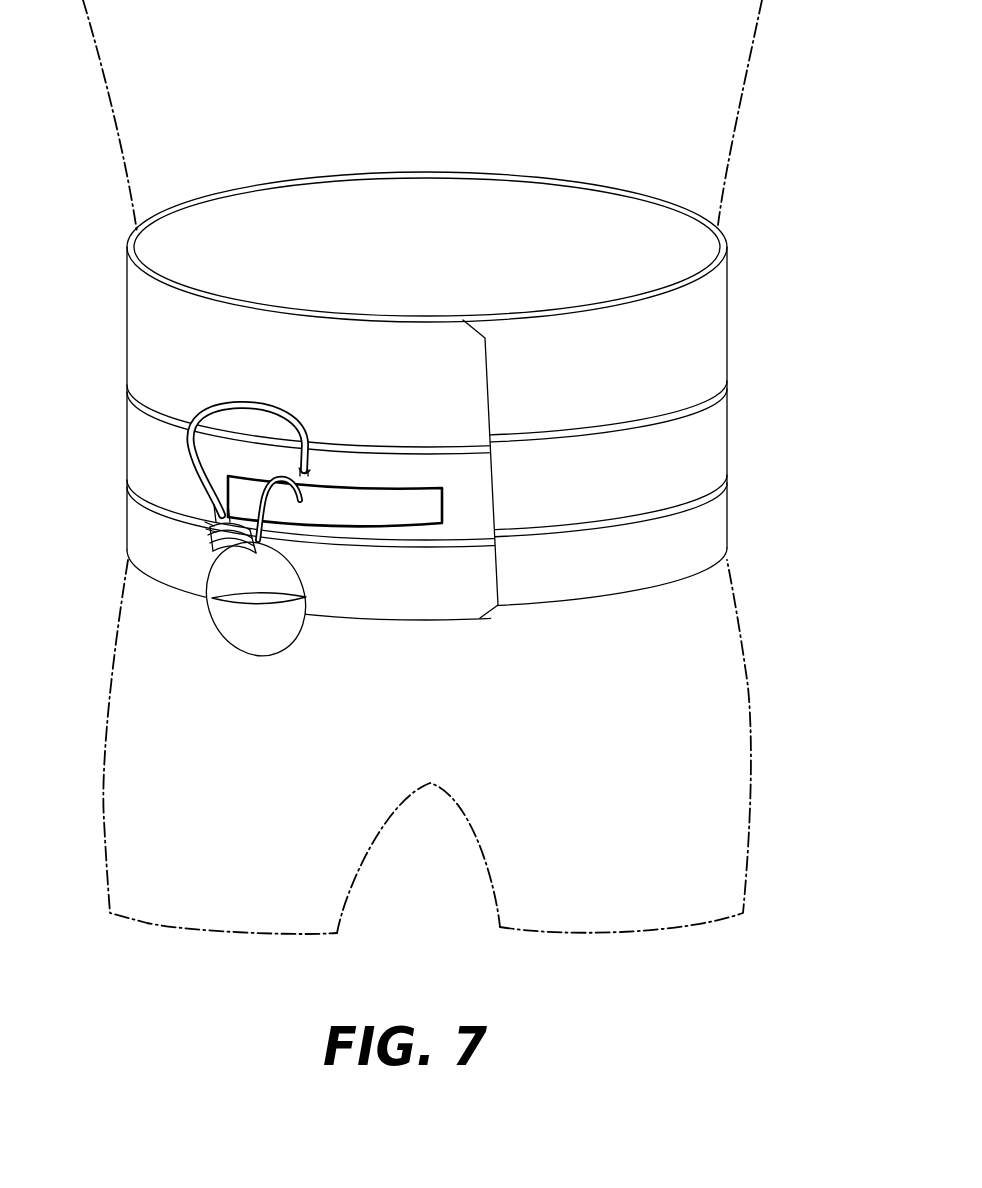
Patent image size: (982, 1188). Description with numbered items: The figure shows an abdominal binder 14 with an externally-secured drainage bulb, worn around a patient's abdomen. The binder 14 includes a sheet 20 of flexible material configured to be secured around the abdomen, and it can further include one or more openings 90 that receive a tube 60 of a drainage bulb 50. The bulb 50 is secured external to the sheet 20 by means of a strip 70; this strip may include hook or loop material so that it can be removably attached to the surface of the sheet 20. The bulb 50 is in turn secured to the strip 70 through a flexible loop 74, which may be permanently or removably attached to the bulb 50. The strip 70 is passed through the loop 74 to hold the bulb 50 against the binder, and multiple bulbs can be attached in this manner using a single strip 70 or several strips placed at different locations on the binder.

The abdominal binder 14 is at (826, 238).
The sheet 20 is at (118, 324).
The drainage bulb 50 is at (267, 584).
The tube 60 is at (208, 396).
The strip 70 is at (430, 507).
The flexible loop 74 is at (300, 500).
The opening 90 is at (310, 482).